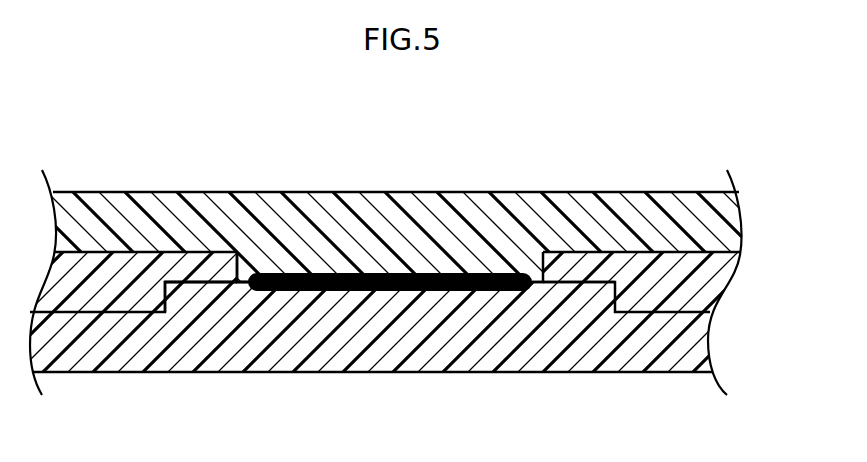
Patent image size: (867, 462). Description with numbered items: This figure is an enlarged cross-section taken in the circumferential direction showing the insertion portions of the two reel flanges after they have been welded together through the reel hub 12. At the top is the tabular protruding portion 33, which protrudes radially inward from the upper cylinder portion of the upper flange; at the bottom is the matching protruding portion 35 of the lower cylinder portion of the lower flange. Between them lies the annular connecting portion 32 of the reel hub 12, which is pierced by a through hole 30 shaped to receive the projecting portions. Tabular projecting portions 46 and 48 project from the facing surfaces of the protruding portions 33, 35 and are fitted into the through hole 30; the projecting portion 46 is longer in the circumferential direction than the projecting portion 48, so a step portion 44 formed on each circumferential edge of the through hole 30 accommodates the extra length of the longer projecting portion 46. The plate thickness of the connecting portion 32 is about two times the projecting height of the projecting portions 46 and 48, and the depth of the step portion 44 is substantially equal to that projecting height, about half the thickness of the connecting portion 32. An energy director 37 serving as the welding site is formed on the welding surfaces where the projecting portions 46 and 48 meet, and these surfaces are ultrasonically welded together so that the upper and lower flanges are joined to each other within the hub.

The reel hub 12 is at (433, 312).
The through hole 30 is at (533, 251).
The connecting portion 32 is at (695, 280).
The protruding portion 33 is at (658, 222).
The protruding portion 35 is at (663, 357).
The energy director 37 is at (383, 272).
The step portion 44 is at (188, 283).
The projecting portion 46 is at (210, 290).
The projecting portion 48 is at (243, 274).